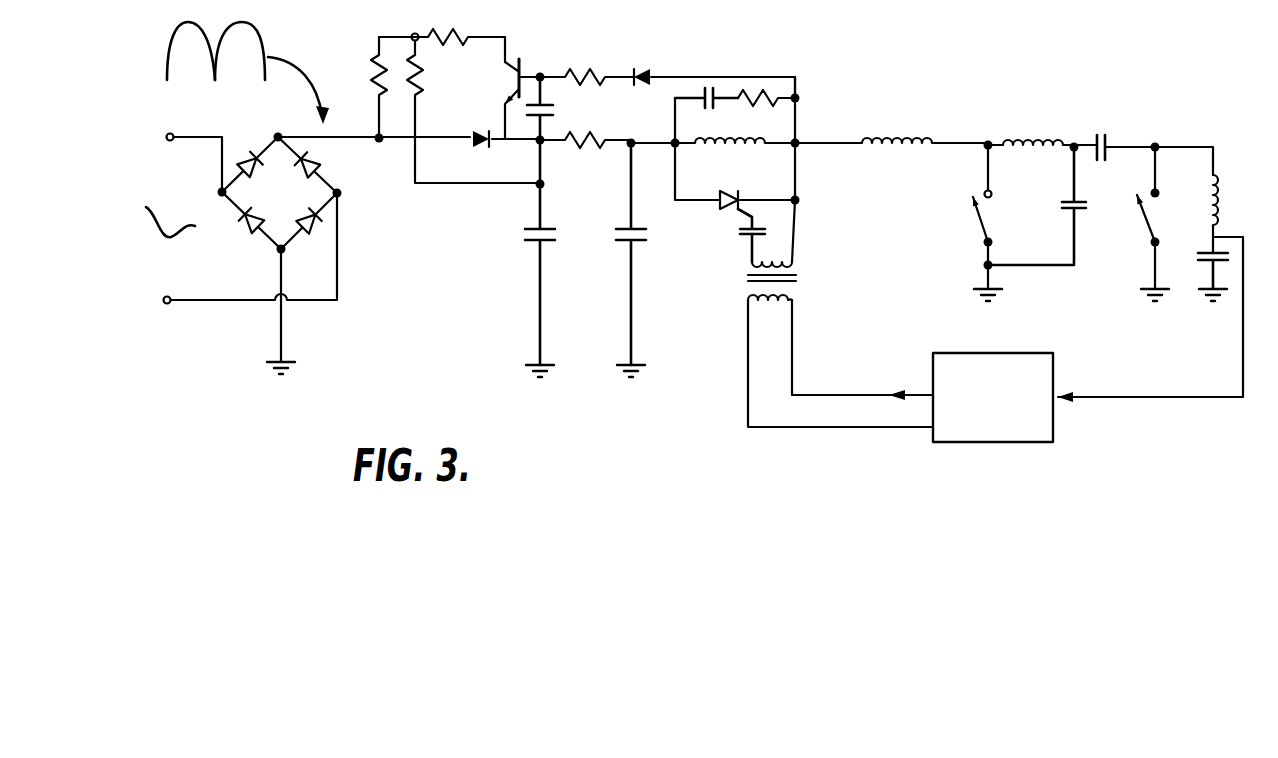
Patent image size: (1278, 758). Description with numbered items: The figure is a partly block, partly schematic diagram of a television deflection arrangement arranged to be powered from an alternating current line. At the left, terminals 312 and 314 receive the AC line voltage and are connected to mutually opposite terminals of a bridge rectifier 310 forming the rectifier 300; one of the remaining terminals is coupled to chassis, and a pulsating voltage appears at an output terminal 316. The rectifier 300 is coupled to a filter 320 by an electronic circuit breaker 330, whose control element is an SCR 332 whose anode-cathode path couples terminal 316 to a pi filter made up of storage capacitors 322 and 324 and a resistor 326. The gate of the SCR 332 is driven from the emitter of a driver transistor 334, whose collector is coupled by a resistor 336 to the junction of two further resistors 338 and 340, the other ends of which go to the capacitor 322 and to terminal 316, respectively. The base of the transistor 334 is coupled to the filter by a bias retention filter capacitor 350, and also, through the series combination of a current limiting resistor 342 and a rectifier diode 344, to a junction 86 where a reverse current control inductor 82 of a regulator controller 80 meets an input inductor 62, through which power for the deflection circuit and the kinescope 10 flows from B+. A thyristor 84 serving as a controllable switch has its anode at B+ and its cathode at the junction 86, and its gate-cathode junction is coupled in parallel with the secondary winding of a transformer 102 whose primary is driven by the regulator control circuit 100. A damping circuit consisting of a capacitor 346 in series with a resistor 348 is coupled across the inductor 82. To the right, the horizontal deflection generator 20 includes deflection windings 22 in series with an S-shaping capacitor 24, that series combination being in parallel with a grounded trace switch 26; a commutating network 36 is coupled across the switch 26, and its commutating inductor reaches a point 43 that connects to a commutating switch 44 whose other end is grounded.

The terminal 312 is at (193, 118).
The terminal 314 is at (168, 298).
The rectifier 300 is at (285, 117).
The bridge rectifier 310 is at (281, 202).
The output terminal 316 is at (275, 137).
The resistor 340 is at (376, 64).
The resistor 338 is at (473, 109).
The resistor 336 is at (432, 40).
The driver transistor 334 is at (519, 60).
The SCR 332 is at (478, 128).
The bias retention filter capacitor 350 is at (553, 116).
The electronic circuit breaker 330 is at (622, 29).
The current limiting resistor 342 is at (595, 74).
The rectifier diode 344 is at (652, 74).
The kinescope 10 is at (585, 154).
The resistor 326 is at (600, 136).
The filter 320 is at (607, 204).
The storage capacitor 322 is at (526, 227).
The storage capacitor 324 is at (640, 228).
The regulator controller 80 is at (718, 182).
The capacitor 346 is at (714, 92).
The resistor 348 is at (768, 92).
The reverse current control inductor 82 is at (752, 147).
The thyristor 84 is at (735, 186).
The junction 86 is at (798, 142).
The transformer 102 is at (842, 280).
The input inductor 62 is at (905, 152).
The point 43 is at (988, 140).
The commutating switch 44 is at (972, 204).
The commutating network 36 is at (1062, 192).
The horizontal deflection generator 20 is at (1112, 130).
The trace switch 26 is at (1134, 242).
The deflection windings 22 is at (1208, 200).
The S-shaping capacitor 24 is at (1202, 254).
The regulator control circuit 100 is at (1053, 378).